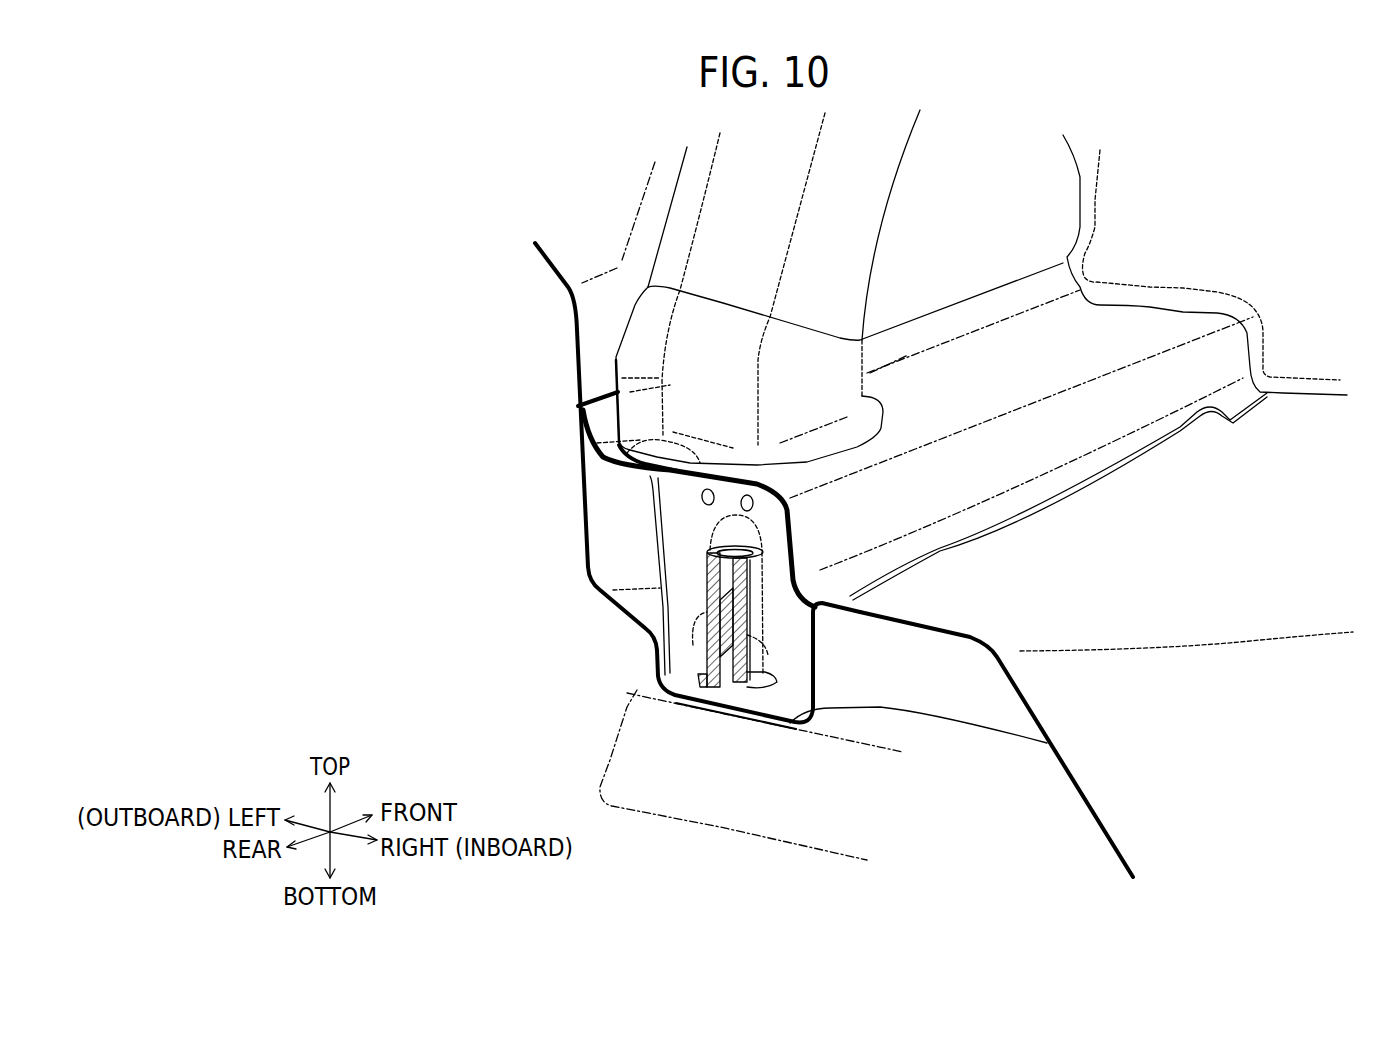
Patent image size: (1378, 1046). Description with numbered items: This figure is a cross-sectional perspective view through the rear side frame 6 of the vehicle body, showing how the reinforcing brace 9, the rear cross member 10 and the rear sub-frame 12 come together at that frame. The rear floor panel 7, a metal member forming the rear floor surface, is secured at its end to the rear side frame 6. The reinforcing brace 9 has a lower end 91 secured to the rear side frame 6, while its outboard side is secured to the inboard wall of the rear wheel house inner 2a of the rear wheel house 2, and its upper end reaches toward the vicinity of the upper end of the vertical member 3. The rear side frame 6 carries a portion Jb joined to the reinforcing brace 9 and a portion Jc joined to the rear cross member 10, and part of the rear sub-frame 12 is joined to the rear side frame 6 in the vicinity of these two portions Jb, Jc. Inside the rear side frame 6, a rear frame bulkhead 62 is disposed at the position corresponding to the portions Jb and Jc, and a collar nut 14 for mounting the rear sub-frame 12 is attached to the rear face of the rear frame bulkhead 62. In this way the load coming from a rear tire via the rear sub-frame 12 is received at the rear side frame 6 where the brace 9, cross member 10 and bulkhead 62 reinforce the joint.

The rear wheel house 2 is at (662, 486).
The rear wheel house inner 2a is at (568, 333).
The vertical member 3 is at (1102, 197).
The rear side frame 6 is at (995, 348).
The rear floor panel 7 is at (1083, 800).
The reinforcing brace 9 is at (677, 220).
The rear cross member 10 is at (950, 702).
The rear sub-frame 12 is at (717, 825).
The collar nut 14 is at (683, 463).
The rear frame bulkhead 62 is at (700, 575).
The lower end 91 is at (650, 327).
The portion joined to the reinforcing brace Jb is at (597, 463).
The portion joined to the rear cross member Jc is at (765, 720).